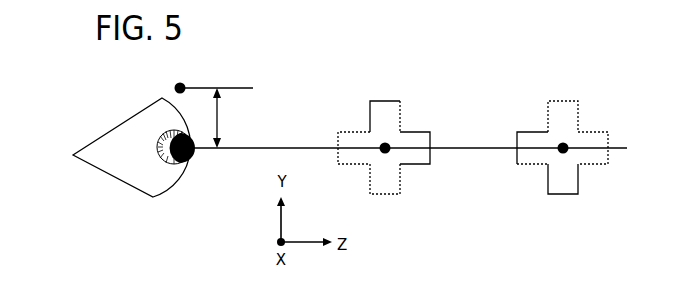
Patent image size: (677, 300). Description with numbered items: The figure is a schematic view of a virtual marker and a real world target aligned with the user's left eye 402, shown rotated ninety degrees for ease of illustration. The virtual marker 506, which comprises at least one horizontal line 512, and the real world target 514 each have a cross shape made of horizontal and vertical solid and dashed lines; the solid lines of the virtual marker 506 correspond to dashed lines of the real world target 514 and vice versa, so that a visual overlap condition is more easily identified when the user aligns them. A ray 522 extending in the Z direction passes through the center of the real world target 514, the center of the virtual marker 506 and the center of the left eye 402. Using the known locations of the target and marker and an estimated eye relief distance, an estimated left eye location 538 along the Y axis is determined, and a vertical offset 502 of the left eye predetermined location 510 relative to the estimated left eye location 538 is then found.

The left eye 402 is at (87, 140).
The left eye predetermined location 510 is at (176, 84).
The vertical offset 502 is at (217, 110).
The estimated left eye location 538 is at (190, 151).
The horizontal line 512 is at (385, 100).
The virtual marker 506 is at (407, 135).
The ray 522 is at (457, 149).
The real world target 514 is at (608, 132).